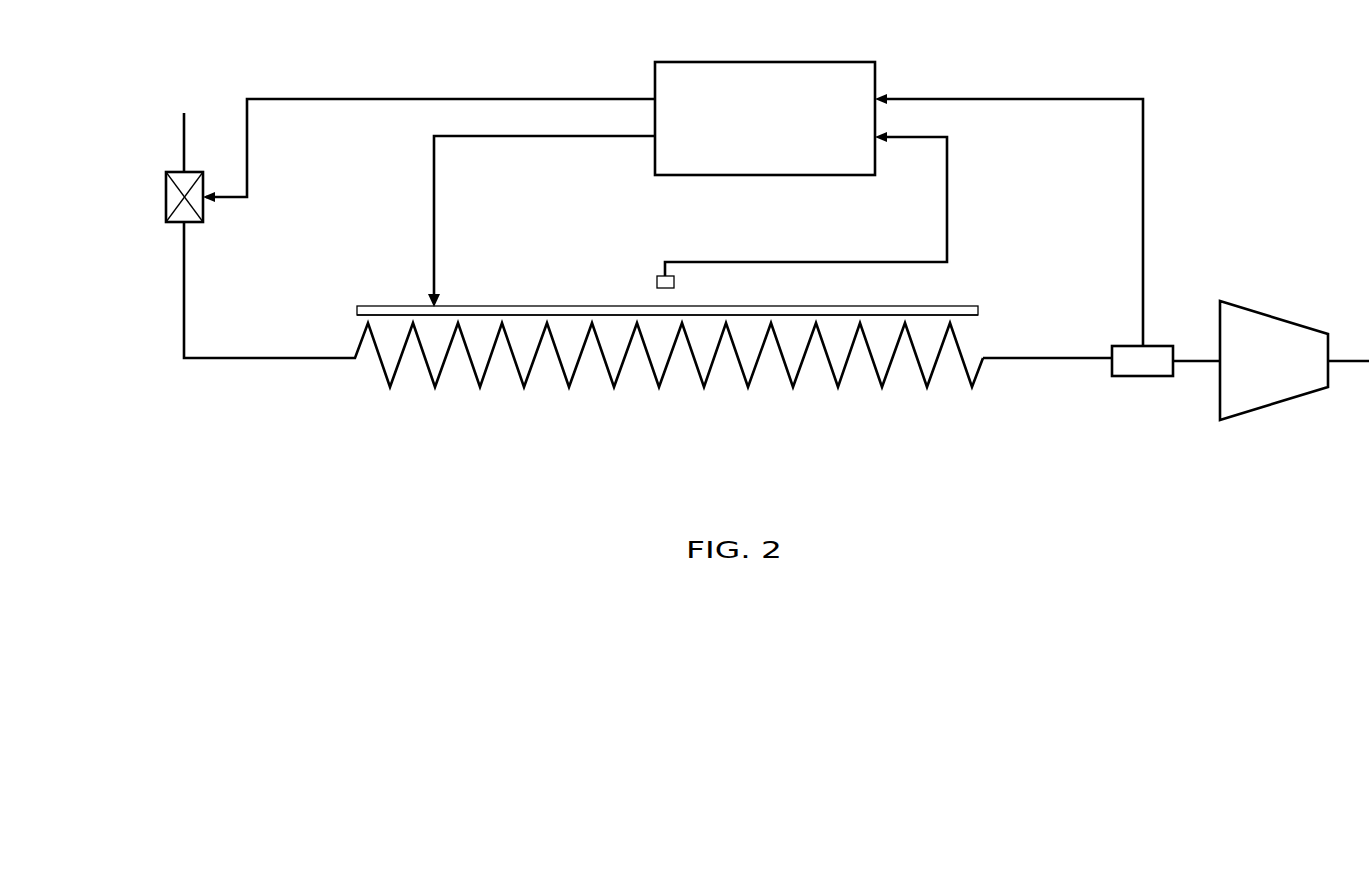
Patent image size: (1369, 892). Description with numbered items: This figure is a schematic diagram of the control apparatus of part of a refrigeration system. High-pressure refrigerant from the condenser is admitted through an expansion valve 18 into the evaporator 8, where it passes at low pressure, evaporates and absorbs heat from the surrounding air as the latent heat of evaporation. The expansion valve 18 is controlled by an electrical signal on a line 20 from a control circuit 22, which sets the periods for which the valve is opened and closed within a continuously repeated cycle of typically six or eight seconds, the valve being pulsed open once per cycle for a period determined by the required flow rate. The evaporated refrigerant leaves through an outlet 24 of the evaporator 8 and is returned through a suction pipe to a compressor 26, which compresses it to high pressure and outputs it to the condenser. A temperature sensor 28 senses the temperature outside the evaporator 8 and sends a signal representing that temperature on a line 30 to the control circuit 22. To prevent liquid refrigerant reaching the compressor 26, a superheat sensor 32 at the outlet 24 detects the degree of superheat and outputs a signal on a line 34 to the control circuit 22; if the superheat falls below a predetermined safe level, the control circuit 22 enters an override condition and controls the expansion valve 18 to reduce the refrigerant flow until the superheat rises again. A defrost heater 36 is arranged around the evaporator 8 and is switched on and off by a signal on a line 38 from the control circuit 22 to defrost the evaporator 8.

The evaporator 8 is at (683, 393).
The expansion valve 18 is at (167, 205).
The line 20 is at (458, 98).
The control circuit 22 is at (754, 129).
The outlet 24 is at (1050, 363).
The compressor 26 is at (1283, 390).
The temperature sensor 28 is at (675, 281).
The line 30 is at (947, 198).
The superheat sensor 32 is at (1125, 346).
The line 34 is at (1143, 218).
The defrost heater 36 is at (581, 305).
The line 38 is at (434, 220).